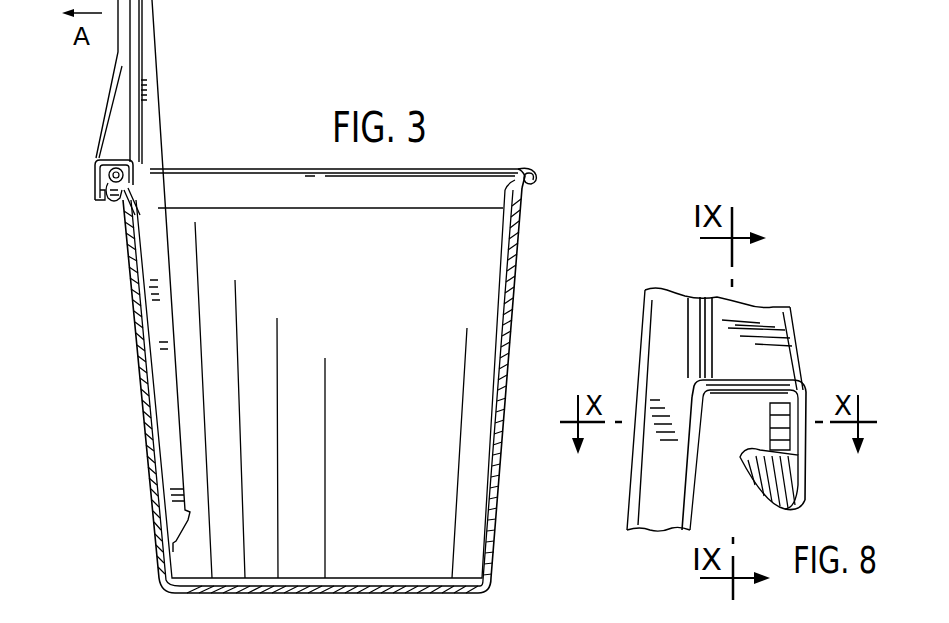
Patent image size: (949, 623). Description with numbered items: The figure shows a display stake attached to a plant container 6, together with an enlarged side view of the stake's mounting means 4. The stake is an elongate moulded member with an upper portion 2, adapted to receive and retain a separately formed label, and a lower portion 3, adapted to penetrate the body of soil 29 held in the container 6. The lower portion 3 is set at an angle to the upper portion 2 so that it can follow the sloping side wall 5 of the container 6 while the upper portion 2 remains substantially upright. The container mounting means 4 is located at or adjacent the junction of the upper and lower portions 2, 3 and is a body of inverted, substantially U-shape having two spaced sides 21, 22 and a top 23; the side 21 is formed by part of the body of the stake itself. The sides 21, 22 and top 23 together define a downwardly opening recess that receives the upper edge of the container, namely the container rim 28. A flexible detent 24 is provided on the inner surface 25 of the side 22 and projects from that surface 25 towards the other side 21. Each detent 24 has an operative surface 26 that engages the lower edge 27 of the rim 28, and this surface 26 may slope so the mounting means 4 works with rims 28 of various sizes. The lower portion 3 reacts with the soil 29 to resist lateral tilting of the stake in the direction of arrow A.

In FIG. 3, the upper portion 2 is at (160, 47).
In FIG. 8, the upper portion 2 is at (803, 326).
In FIG. 3, the lower portion 3 is at (166, 347).
In FIG. 3, the container mounting means 4 is at (91, 190).
In FIG. 8, the container mounting means 4 is at (815, 400).
In FIG. 3, the side wall 5 is at (515, 347).
In FIG. 3, the plant container 6 is at (519, 292).
In FIG. 8, the side 21 is at (688, 498).
In FIG. 8, the side 22 is at (808, 477).
In FIG. 8, the top 23 is at (707, 390).
In FIG. 3, the flexible detent 24 is at (112, 188).
In FIG. 8, the flexible detent 24 is at (793, 487).
In FIG. 8, the inner surface 25 is at (773, 408).
In FIG. 8, the operative surface 26 is at (758, 450).
In FIG. 3, the lower edge 27 is at (527, 183).
In FIG. 3, the container rim 28 is at (536, 176).
In FIG. 3, the soil 29 is at (470, 508).